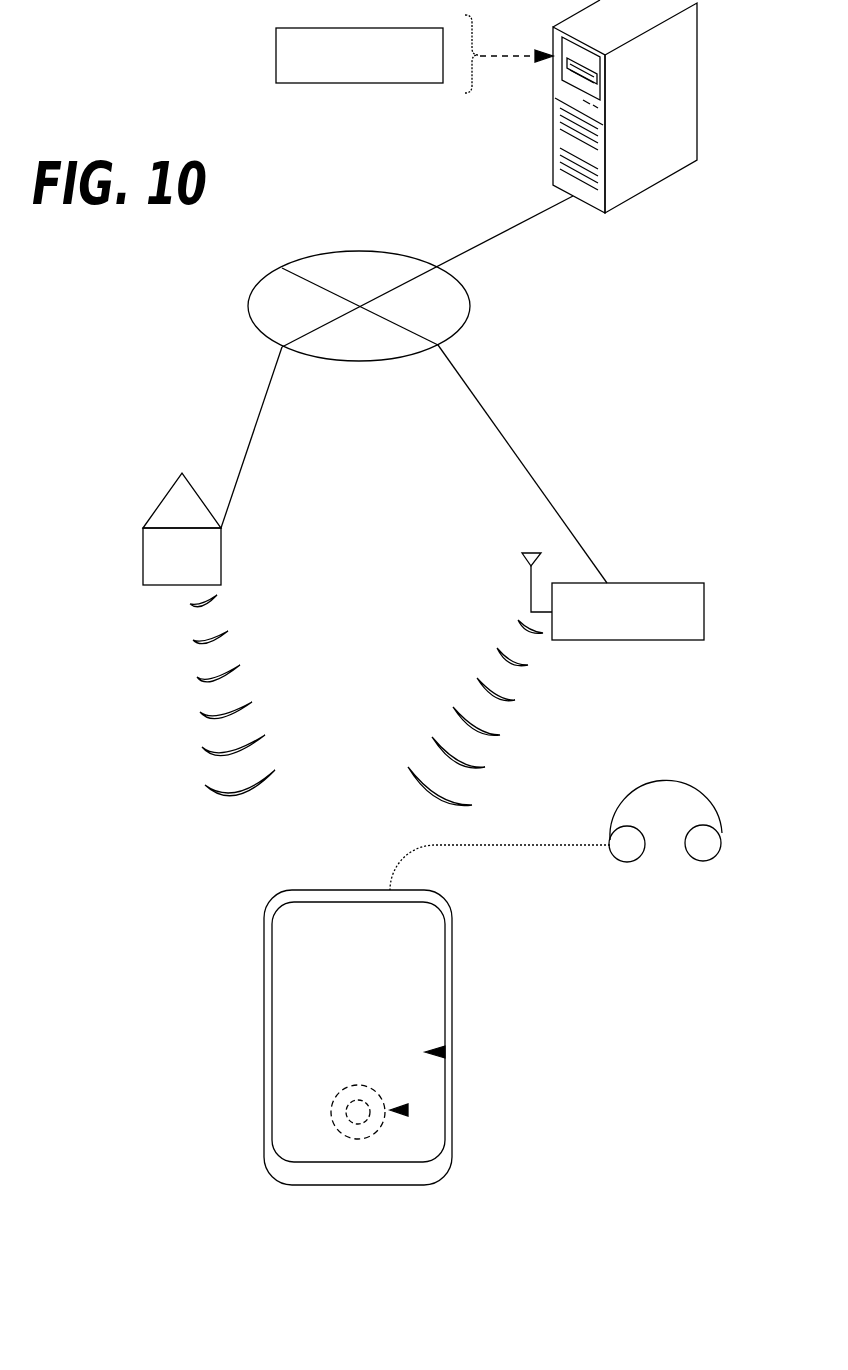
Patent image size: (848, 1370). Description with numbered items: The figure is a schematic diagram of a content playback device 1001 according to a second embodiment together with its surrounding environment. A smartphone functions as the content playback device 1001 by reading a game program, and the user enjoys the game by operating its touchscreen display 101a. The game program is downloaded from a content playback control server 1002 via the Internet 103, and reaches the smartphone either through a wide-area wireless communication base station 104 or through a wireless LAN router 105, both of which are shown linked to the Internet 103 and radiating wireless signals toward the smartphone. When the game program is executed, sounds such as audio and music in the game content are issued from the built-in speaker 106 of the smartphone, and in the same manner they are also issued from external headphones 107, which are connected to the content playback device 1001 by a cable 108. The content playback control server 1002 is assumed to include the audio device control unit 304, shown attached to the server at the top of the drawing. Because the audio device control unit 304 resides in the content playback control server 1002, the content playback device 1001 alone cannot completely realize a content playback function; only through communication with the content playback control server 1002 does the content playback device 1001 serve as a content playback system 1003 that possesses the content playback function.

The audio device control unit 304 is at (276, 52).
The content playback control server 1002 is at (697, 83).
The Internet 103 is at (470, 306).
The wide-area wireless communication base station 104 is at (221, 560).
The wireless LAN router 105 is at (704, 608).
The cable 108 is at (555, 843).
The headphones 107 is at (722, 838).
The content playback device 1001 is at (357, 1186).
The touchscreen display 101a is at (445, 1052).
The built-in speaker 106 is at (408, 1110).
The content playback system 1003 is at (385, 1319).